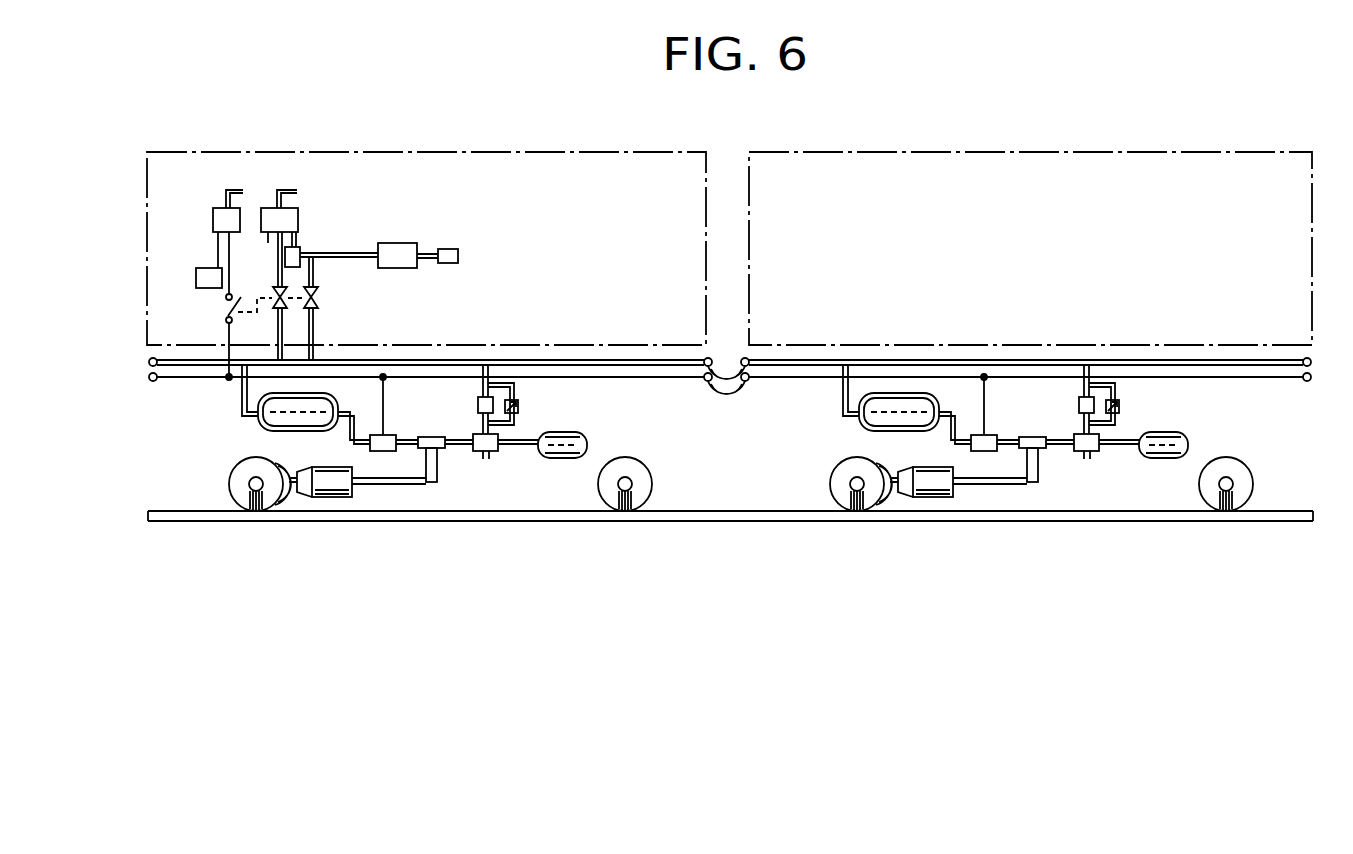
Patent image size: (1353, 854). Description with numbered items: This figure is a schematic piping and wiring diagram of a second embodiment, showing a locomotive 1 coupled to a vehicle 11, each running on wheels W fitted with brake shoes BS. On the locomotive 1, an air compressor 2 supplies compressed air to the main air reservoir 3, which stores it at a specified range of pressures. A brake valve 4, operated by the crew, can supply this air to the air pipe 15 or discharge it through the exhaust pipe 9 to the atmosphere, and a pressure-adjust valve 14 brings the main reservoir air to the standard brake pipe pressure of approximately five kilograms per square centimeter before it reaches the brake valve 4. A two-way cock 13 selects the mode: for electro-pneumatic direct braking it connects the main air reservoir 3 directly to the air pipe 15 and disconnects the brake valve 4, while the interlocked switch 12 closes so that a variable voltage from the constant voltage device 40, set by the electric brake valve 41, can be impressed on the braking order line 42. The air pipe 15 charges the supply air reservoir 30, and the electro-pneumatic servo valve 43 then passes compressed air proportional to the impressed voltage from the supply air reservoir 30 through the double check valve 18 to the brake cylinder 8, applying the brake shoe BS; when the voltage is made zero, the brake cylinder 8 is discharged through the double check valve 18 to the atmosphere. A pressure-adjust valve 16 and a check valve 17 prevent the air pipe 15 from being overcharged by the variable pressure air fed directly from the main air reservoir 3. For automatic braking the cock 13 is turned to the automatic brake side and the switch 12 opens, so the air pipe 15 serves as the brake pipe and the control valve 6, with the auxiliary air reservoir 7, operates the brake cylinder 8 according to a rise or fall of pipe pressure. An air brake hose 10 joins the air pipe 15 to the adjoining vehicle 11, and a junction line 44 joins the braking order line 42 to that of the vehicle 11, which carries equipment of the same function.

The locomotive 1 is at (582, 150).
The vehicle 11 is at (1125, 152).
The air compressor 2 is at (485, 236).
The air reservoir 3 is at (417, 182).
The brake valve 4 is at (388, 128).
The control valve 6 is at (490, 452).
The auxiliary air reservoir 7 is at (577, 432).
The brake cylinder 8 is at (329, 498).
The exhaust pipe 9 is at (267, 244).
The air brake hose 10 is at (728, 366).
The switch 12 is at (226, 313).
The two-way cock 13 is at (324, 299).
The pressure-adjust valve 14 is at (300, 248).
The air pipe 15 is at (421, 359).
The pressure-adjust valve 16 is at (478, 405).
The check valve 17 is at (518, 406).
The double check valve 18 is at (439, 538).
The supply air reservoir 30 is at (157, 449).
The constant voltage device 40 is at (196, 253).
The electric brake valve 41 is at (278, 128).
The braking order line 42 is at (199, 379).
The electro-pneumatic servo valve 43 is at (424, 413).
The junction line 44 is at (728, 393).
The wheels W is at (229, 484).
The brake shoes BS is at (286, 497).